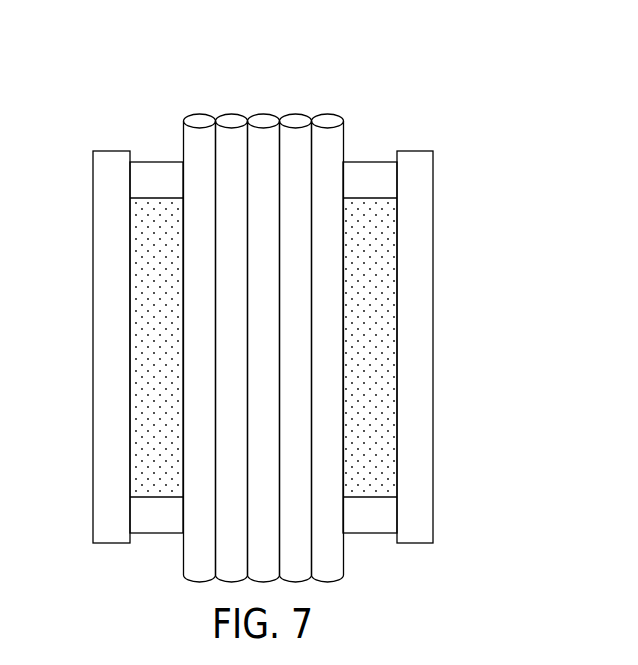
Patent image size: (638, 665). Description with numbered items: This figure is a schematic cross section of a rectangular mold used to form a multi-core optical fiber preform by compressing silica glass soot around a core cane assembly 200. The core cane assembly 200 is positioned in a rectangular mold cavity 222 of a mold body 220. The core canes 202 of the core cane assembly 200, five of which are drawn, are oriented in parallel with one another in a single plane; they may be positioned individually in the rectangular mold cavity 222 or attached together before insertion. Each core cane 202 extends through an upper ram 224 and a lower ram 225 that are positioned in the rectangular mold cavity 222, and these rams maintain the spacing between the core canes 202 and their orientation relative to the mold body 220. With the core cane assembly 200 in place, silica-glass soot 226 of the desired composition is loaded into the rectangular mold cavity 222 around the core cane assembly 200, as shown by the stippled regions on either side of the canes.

The core cane assembly 200 is at (247, 95).
The core canes 202 is at (198, 112).
The mold body 220 is at (447, 166).
The rectangular mold cavity 222 is at (373, 146).
The upper ram 224 is at (152, 161).
The lower ram 225 is at (368, 534).
The silica-glass soot 226 is at (135, 343).